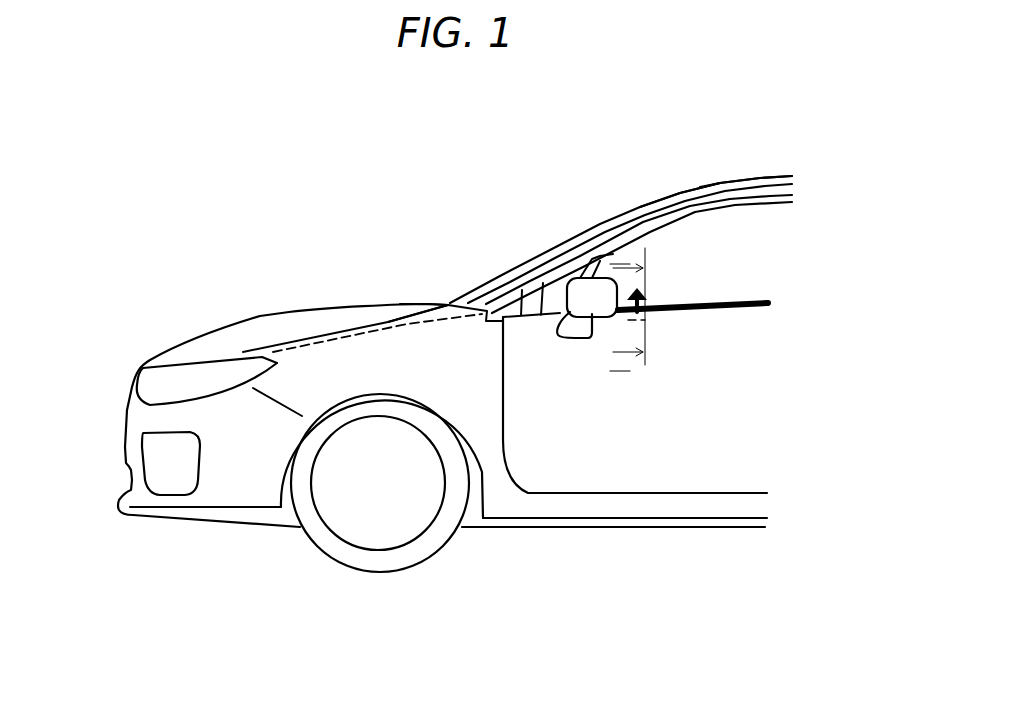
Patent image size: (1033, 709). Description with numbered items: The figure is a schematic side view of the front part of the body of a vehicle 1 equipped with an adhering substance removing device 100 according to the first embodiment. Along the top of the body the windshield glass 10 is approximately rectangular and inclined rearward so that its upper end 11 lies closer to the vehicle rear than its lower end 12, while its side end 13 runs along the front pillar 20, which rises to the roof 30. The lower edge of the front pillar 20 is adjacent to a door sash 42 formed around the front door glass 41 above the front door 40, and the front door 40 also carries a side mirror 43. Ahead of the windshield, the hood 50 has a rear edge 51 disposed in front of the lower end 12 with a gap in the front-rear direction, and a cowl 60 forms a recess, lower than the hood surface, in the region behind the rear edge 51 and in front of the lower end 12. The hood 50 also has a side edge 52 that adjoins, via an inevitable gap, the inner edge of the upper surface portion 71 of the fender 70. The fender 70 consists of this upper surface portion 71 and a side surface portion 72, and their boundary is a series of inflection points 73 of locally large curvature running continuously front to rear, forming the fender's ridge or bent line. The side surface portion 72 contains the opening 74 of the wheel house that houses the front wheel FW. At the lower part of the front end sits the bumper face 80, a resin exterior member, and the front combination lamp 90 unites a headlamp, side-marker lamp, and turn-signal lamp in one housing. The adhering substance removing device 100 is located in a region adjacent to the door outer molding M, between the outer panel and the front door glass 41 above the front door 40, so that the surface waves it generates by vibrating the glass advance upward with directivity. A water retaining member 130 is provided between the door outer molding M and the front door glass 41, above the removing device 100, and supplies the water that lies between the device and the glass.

The vehicle 1 is at (209, 171).
The windshield glass 10 is at (589, 227).
The upper end 11 is at (662, 198).
The lower end 12 is at (448, 305).
The side end 13 is at (613, 223).
The front pillar 20 is at (643, 221).
The roof 30 is at (727, 181).
The front door 40 is at (676, 408).
The front door glass 41 is at (699, 274).
The door sash 42 is at (668, 223).
The side mirror 43 is at (588, 310).
The hood 50 is at (289, 312).
The rear edge 51 is at (428, 304).
The side edge 52 is at (273, 346).
The cowl 60 is at (443, 292).
The fender 70 is at (360, 365).
The upper surface portion 71 is at (388, 322).
The side surface portion 72 is at (457, 375).
The inflection points 73 is at (407, 324).
The opening 74 is at (382, 386).
The bumper face 80 is at (215, 490).
The front combination lamp 90 is at (167, 377).
The adhering substance removing device 100 is at (650, 320).
The water retaining member 130 is at (770, 304).
The front wheel FW is at (343, 563).
The door outer molding M is at (755, 302).